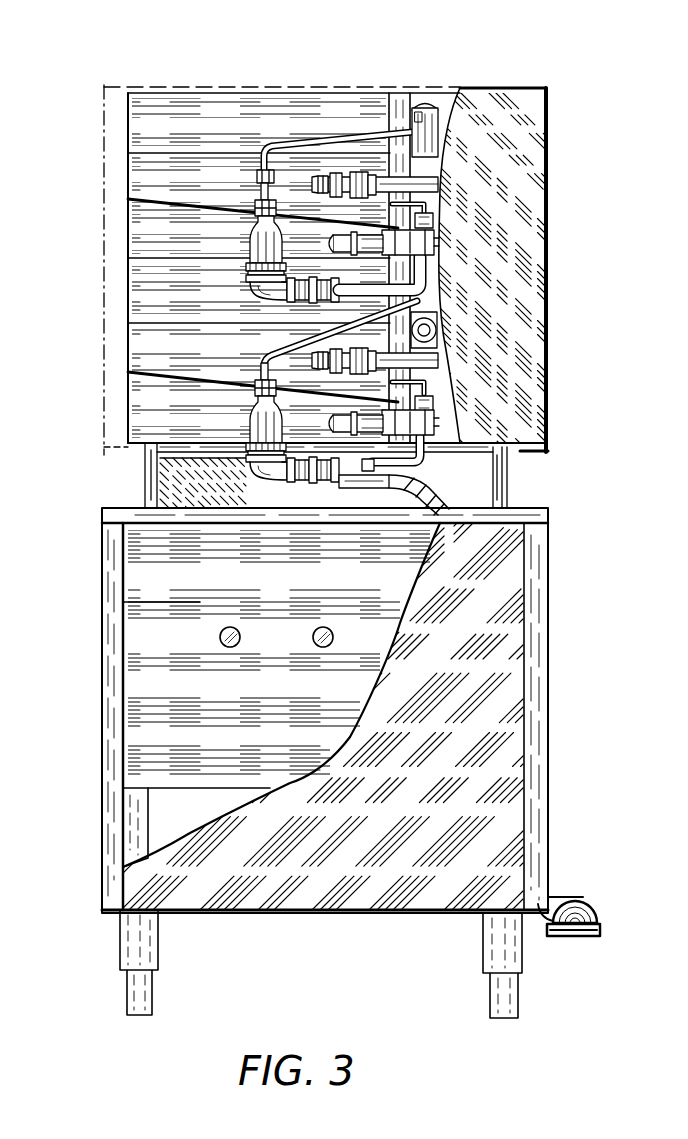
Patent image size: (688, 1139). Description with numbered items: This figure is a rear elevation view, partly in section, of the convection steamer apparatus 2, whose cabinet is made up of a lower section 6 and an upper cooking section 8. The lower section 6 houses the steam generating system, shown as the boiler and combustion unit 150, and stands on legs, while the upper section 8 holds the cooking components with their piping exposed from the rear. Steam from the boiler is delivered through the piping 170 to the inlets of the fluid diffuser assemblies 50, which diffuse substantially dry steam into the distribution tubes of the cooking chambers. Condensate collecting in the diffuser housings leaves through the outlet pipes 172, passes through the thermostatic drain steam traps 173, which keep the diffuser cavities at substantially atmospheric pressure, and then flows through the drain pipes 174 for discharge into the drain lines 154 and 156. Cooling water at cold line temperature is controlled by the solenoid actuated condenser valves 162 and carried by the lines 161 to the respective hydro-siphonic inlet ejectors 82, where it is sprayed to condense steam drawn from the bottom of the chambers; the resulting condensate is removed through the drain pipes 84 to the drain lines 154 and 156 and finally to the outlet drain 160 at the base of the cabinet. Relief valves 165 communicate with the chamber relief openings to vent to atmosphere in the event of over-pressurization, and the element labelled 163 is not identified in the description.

The convection steamer apparatus 2 is at (412, 62).
The lower section 6 is at (563, 697).
The upper section 8 is at (562, 287).
The fluid diffuser assembly 50 is at (152, 182).
The inlet ejector 82 is at (250, 194).
The drain pipe 84 is at (248, 270).
The boiler and combustion unit 150 is at (180, 664).
The drain line 154 is at (348, 490).
The drain line 156 is at (412, 500).
The outlet drain 160 is at (577, 907).
The cooling water line 161 is at (322, 138).
The solenoid actuated condenser valve 162 is at (433, 140).
The branch pipe 163 is at (330, 238).
The relief valve 165 is at (436, 245).
The steam piping 170 is at (423, 183).
The outlet pipe 172 is at (427, 203).
The thermostatic drain steam trap 173 is at (433, 218).
The drain pipe 174 is at (428, 270).